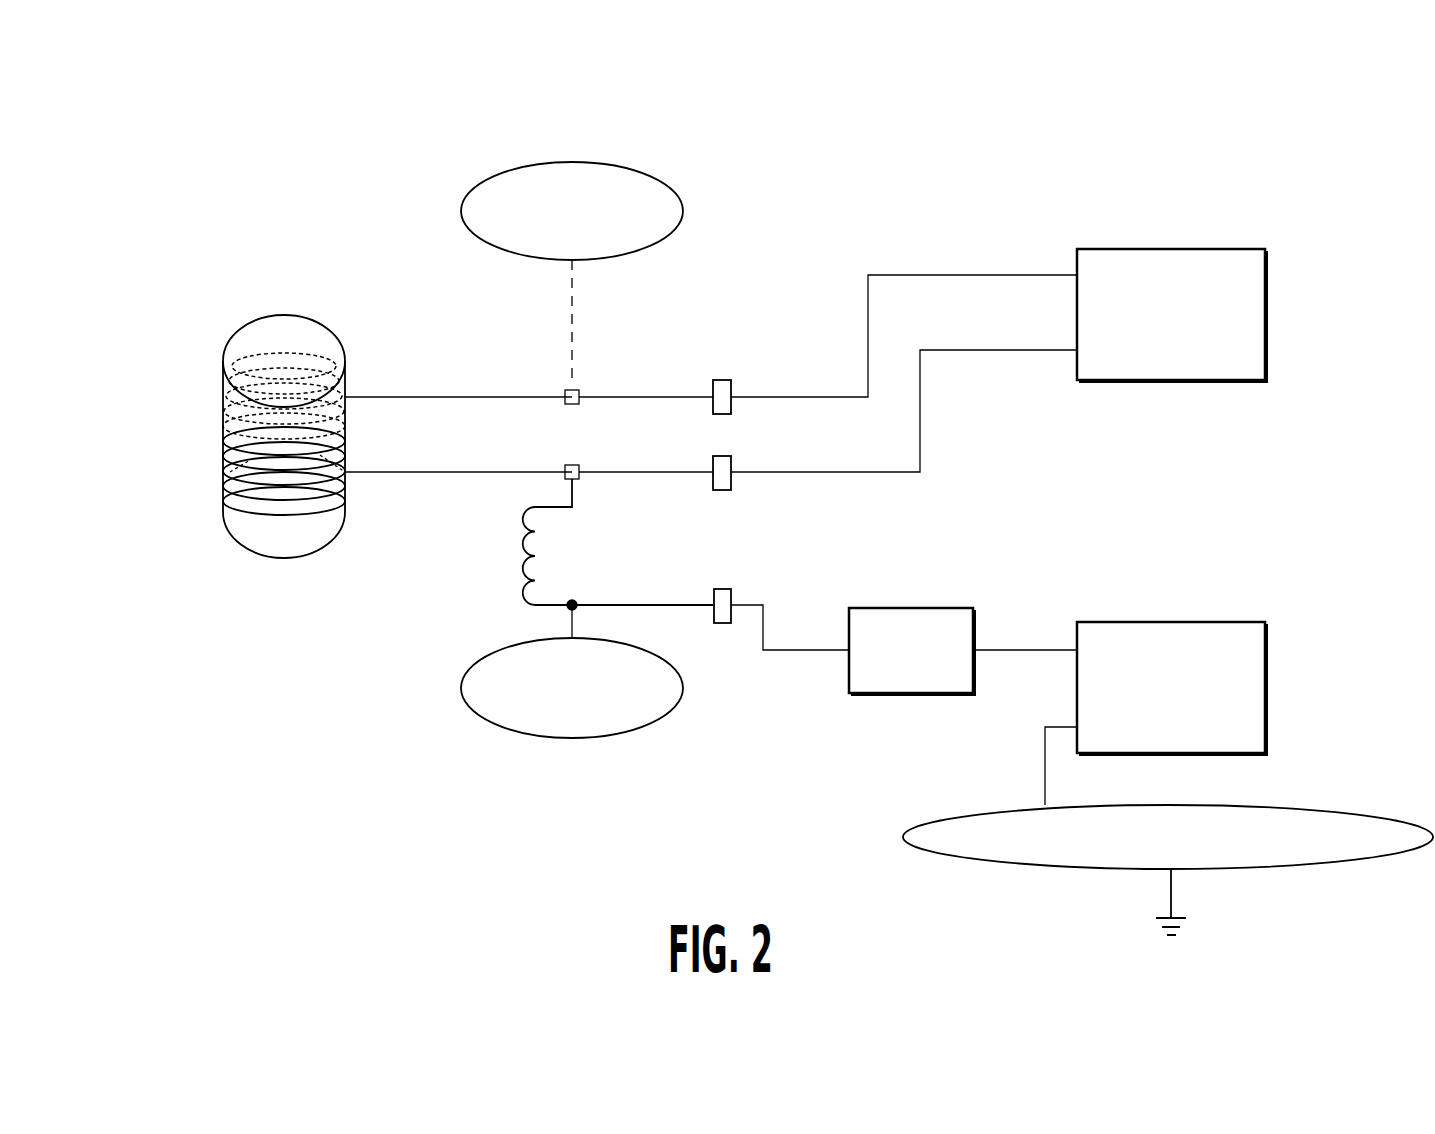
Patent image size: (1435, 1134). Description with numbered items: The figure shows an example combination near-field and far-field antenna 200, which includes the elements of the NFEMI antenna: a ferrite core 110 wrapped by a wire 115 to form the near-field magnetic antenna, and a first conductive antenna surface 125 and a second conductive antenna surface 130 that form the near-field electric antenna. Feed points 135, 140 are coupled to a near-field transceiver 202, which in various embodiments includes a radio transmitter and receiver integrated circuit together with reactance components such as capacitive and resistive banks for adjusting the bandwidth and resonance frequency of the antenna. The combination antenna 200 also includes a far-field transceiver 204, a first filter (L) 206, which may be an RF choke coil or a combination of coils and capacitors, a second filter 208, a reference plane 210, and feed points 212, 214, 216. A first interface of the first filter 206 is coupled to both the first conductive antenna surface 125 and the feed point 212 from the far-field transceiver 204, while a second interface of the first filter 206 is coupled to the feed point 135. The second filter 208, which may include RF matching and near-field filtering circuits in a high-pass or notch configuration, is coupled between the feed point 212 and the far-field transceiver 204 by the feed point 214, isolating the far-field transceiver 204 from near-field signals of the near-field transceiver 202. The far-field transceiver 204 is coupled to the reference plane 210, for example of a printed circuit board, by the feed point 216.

The combination near-field and far-field antenna 200 is at (168, 136).
The ferrite core 110 is at (238, 346).
The wire 115 is at (245, 514).
The first conductive antenna surface 125 is at (500, 727).
The second conductive antenna surface 130 is at (668, 189).
The feed point 135 is at (731, 462).
The feed point 140 is at (731, 384).
The near-field transceiver 202 is at (1177, 249).
The far-field transceiver 204 is at (1188, 622).
The first filter (L) 206 is at (520, 572).
The second filter 208 is at (911, 608).
The reference plane 210 is at (1365, 813).
The feed point 212 is at (731, 594).
The feed point 214 is at (1035, 650).
The feed point 216 is at (1045, 755).